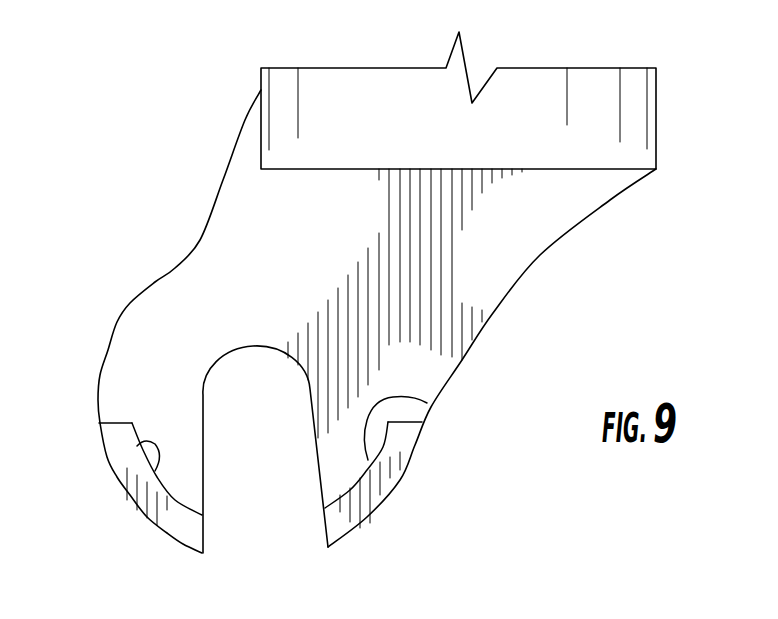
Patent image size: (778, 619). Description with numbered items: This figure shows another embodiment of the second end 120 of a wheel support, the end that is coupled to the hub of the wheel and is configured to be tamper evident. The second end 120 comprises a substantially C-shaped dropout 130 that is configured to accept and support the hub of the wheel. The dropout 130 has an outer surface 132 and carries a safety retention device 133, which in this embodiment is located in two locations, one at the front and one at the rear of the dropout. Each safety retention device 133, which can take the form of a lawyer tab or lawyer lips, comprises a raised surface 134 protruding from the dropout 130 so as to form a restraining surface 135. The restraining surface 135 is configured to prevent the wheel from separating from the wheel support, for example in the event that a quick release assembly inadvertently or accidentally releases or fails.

The second end 120 is at (606, 119).
The dropout 130 is at (522, 235).
The outer surface 132 is at (153, 366).
The safety retention device 133 is at (127, 498).
The raised surface 134 is at (180, 530).
The restraining surface 135 is at (137, 445).